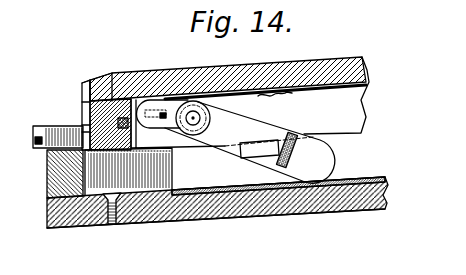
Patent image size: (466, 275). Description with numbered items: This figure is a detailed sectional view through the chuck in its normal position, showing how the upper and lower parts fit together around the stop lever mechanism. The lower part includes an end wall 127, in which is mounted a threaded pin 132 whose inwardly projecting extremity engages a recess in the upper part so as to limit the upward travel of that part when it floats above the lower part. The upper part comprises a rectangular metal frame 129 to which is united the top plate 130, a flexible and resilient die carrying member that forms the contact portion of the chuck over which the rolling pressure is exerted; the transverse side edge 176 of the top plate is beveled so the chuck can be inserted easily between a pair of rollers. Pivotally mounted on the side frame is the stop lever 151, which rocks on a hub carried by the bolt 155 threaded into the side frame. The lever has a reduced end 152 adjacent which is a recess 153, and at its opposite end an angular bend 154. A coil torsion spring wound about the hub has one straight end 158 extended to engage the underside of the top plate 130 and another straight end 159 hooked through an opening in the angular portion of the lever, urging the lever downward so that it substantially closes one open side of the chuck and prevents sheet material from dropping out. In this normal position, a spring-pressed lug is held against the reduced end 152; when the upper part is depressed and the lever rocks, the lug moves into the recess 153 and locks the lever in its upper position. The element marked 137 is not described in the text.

The end wall 127 is at (47, 199).
The rectangular metal frame 129 is at (90, 106).
The top plate 130 is at (330, 60).
The threaded pin 132 is at (37, 147).
The plate 137 is at (82, 84).
The stop lever 151 is at (236, 214).
The reduced end 152 is at (148, 100).
The recess 153 is at (171, 98).
The angular bend 154 is at (310, 168).
The bolt 155 is at (193, 120).
The straight end of torsion spring 158 is at (270, 99).
The straight end of torsion spring 159 is at (270, 146).
The transverse side edge 176 is at (101, 74).